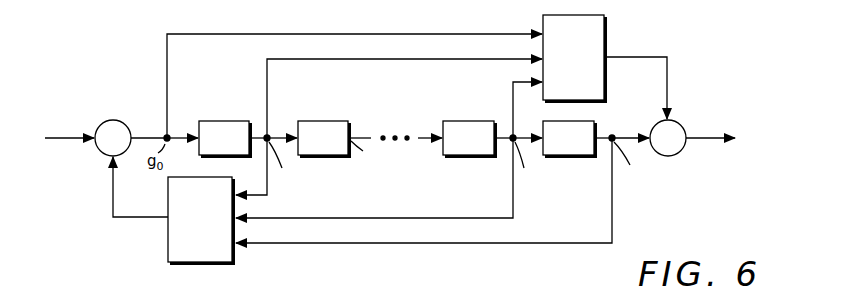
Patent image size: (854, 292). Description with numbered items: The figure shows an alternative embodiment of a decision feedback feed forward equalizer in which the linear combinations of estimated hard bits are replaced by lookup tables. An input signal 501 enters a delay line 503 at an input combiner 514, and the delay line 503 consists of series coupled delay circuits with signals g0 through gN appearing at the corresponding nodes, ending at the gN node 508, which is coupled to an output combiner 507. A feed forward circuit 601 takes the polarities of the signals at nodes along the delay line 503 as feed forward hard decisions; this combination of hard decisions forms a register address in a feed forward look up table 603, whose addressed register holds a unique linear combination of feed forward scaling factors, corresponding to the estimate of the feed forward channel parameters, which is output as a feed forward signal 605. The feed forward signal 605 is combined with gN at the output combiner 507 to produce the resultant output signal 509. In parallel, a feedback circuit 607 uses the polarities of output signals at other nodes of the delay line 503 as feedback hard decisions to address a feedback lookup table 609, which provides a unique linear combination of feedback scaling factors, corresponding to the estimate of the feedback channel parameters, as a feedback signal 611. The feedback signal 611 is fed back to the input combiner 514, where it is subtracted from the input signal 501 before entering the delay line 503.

The input signal 501 is at (40, 105).
The input combiner 514 is at (135, 112).
The delay line 503 is at (423, 119).
The feed forward circuit 601 is at (420, 77).
The feed forward look up table 603 is at (607, 23).
The feed forward signal 605 is at (668, 80).
The gN node 508 is at (614, 131).
The output combiner 507 is at (678, 153).
The output signal 509 is at (761, 124).
The feedback circuit 607 is at (288, 207).
The feedback lookup table 609 is at (175, 266).
The feedback signal 611 is at (111, 200).